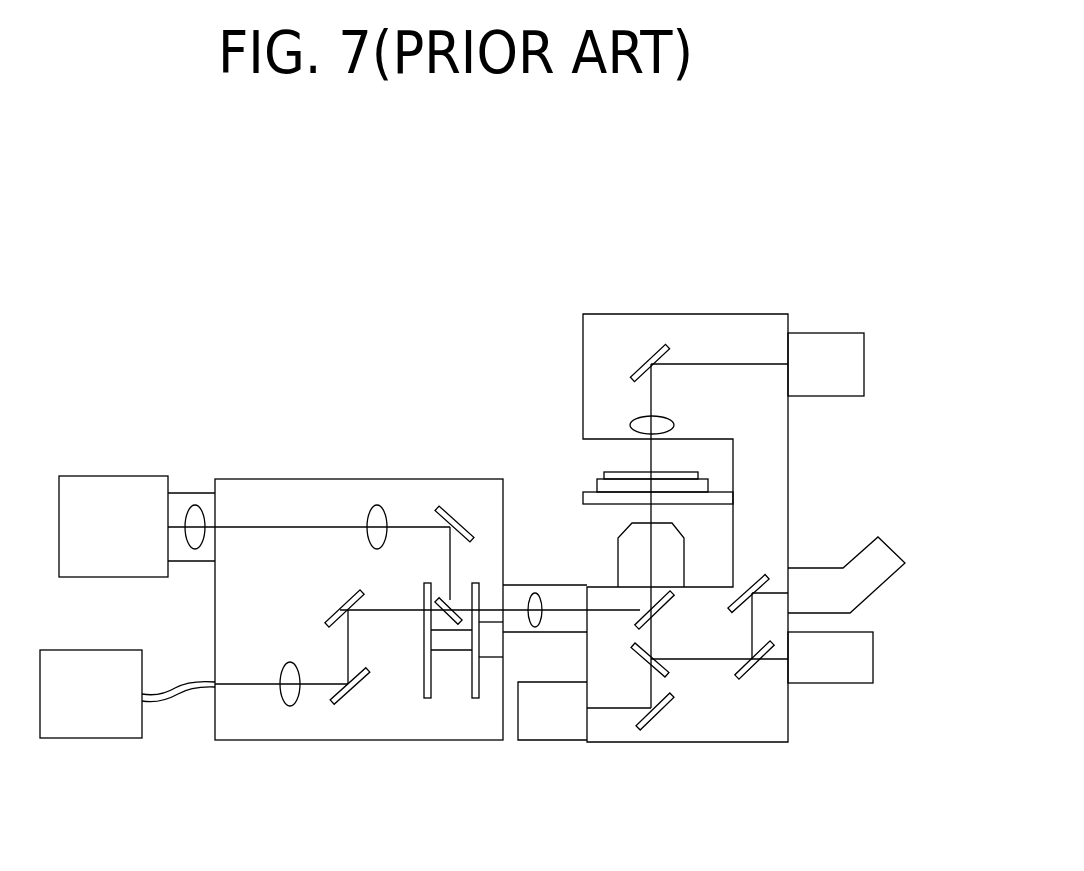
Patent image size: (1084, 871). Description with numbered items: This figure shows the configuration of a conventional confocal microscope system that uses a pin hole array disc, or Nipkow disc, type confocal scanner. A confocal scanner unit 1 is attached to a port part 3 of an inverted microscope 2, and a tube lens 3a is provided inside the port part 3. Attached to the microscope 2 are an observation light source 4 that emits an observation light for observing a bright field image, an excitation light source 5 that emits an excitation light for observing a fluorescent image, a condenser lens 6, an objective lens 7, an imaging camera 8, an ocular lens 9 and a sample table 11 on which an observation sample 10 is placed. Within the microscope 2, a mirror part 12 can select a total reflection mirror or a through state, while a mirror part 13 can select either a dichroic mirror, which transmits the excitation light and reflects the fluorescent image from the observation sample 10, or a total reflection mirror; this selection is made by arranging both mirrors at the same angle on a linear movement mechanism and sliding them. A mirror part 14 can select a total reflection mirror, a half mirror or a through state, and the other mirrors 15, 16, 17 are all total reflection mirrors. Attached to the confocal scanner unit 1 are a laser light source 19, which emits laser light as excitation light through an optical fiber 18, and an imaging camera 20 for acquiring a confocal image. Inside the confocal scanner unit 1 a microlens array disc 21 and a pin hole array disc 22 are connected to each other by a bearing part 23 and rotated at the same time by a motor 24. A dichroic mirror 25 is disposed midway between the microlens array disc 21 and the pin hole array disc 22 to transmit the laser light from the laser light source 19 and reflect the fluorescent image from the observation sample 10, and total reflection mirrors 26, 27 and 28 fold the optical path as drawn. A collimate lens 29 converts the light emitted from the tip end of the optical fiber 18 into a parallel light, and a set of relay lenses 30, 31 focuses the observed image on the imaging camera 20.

The confocal scanner unit 1 is at (323, 415).
The inverted microscope 2 is at (673, 218).
The port part 3 is at (522, 584).
The tube lens 3a is at (538, 593).
The observation light source 4 is at (864, 362).
The excitation light source 5 is at (547, 740).
The condenser lens 6 is at (633, 418).
The objective lens 7 is at (685, 547).
The imaging camera 8 is at (873, 658).
The ocular lens 9 is at (895, 550).
The observation sample 10 is at (620, 470).
The sample table 11 is at (597, 483).
The mirror part 12 is at (637, 620).
The mirror part 13 is at (668, 676).
The mirror part 14 is at (752, 670).
The mirror 15 is at (757, 580).
The mirror 16 is at (636, 364).
The mirror 17 is at (660, 715).
The optical fiber 18 is at (163, 700).
The laser light source 19 is at (75, 738).
The imaging camera 20 is at (105, 475).
The microlens array disc 21 is at (422, 699).
The pin hole array disc 22 is at (474, 699).
The bearing part 23 is at (450, 650).
The motor 24 is at (493, 657).
The dichroic mirror 25 is at (443, 596).
The total reflection mirror 26 is at (442, 508).
The total reflection mirror 27 is at (335, 612).
The total reflection mirror 28 is at (350, 698).
The collimate lens 29 is at (290, 706).
The relay lens 30 is at (370, 508).
The relay lens 31 is at (190, 507).